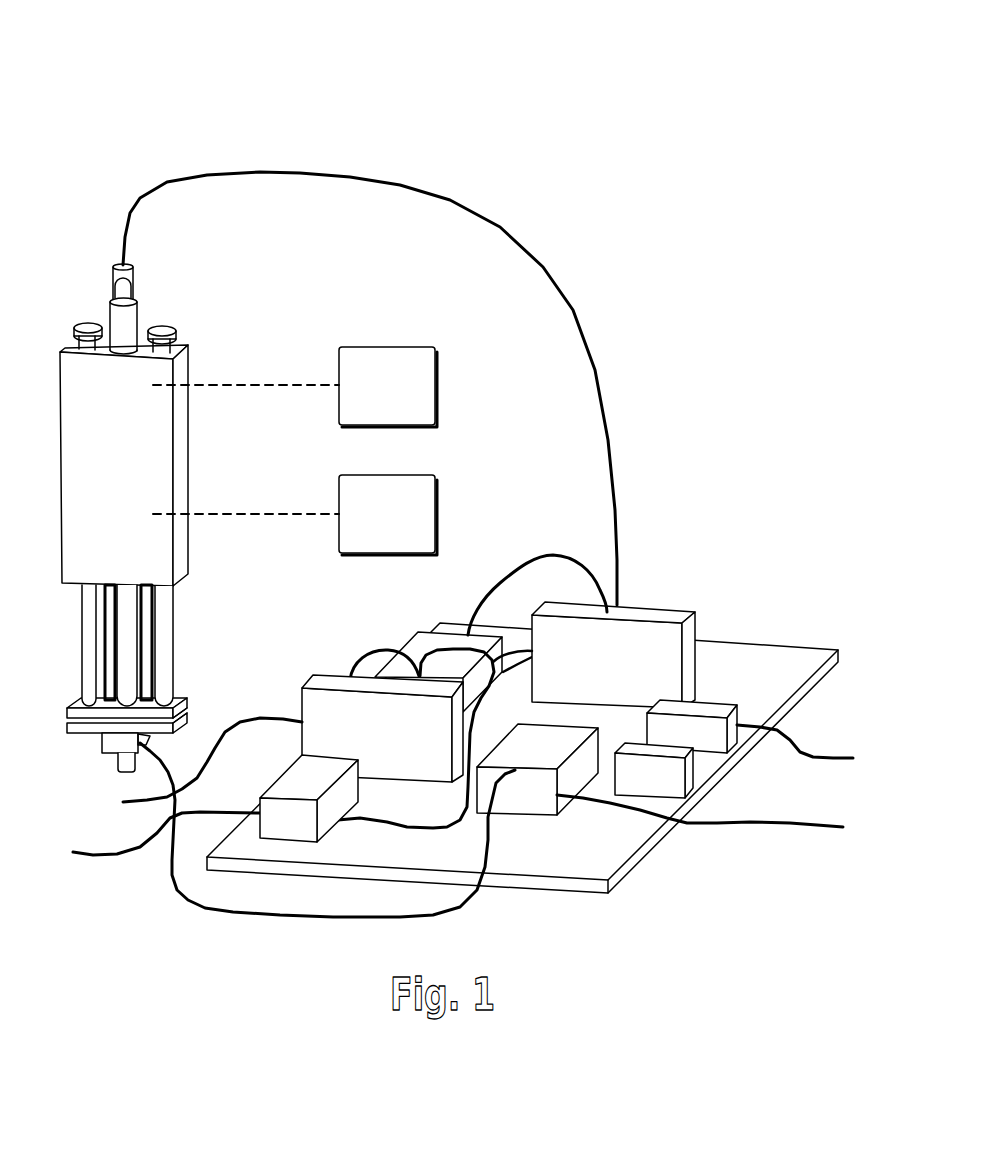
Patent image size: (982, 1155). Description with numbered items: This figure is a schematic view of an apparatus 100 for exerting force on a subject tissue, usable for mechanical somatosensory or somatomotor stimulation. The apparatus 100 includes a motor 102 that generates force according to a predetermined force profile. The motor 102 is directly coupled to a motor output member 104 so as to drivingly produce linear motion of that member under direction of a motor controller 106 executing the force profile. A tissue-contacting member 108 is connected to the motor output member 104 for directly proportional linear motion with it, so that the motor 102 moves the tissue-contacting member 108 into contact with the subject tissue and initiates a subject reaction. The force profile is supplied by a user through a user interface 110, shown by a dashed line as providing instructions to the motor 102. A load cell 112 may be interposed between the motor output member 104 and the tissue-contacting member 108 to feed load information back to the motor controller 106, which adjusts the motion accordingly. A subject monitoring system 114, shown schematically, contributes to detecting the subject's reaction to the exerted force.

The apparatus 100 is at (490, 174).
The motor 102 is at (137, 481).
The motor output member 104 is at (208, 651).
The motor controller 106 is at (633, 652).
The tissue-contacting member 108 is at (118, 767).
The user interface 110 is at (407, 398).
The load cell 112 is at (102, 737).
The subject monitoring system 114 is at (408, 527).